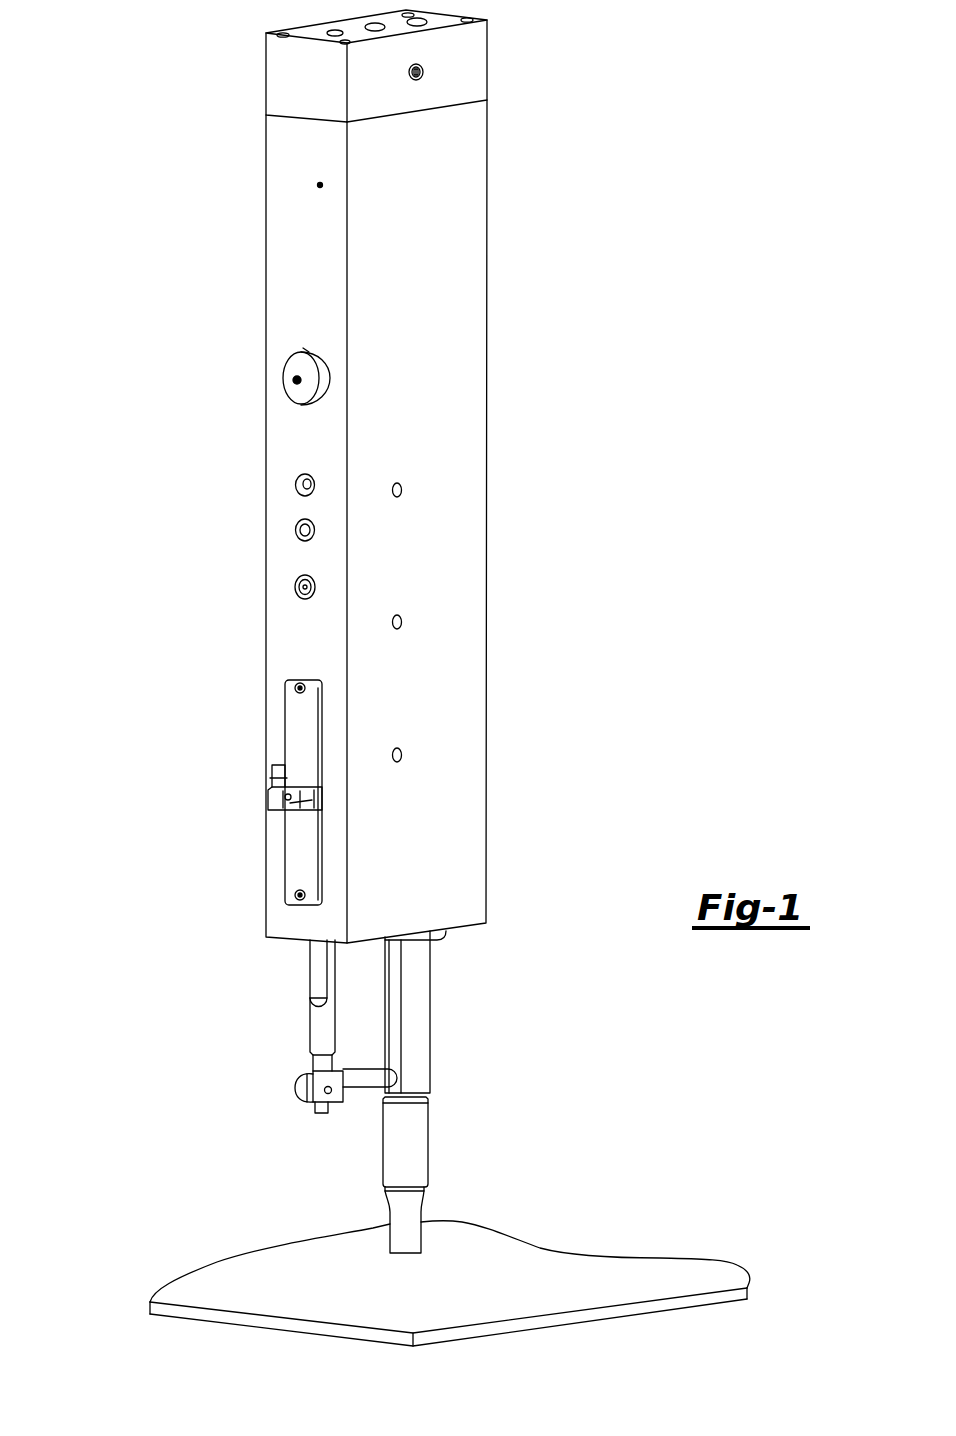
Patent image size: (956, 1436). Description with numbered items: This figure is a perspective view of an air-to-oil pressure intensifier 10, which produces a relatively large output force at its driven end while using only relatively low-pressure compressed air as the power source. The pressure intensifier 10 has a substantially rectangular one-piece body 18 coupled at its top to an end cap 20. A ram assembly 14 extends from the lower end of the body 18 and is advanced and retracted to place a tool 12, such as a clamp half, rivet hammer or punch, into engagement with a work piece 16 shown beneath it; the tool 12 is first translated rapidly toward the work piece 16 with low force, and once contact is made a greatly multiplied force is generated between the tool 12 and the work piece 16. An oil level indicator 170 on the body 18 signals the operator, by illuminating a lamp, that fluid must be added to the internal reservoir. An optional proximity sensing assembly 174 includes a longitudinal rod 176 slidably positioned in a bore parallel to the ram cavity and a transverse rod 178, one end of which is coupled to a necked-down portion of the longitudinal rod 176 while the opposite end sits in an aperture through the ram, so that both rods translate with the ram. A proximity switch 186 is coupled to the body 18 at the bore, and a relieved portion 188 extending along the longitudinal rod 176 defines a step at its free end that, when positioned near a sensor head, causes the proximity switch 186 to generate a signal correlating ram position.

The pressure intensifier 10 is at (100, 286).
The tool 12 is at (413, 1143).
The ram assembly 14 is at (436, 1014).
The work piece 16 is at (513, 1242).
The body 18 is at (472, 513).
The end cap 20 is at (472, 60).
The oil level indicator 170 is at (270, 404).
The proximity sensing assembly 174 is at (297, 1050).
The longitudinal rod 176 is at (318, 1028).
The transverse rod 178 is at (363, 1085).
The proximity switch 186 is at (245, 795).
The relieved portion 188 is at (318, 963).